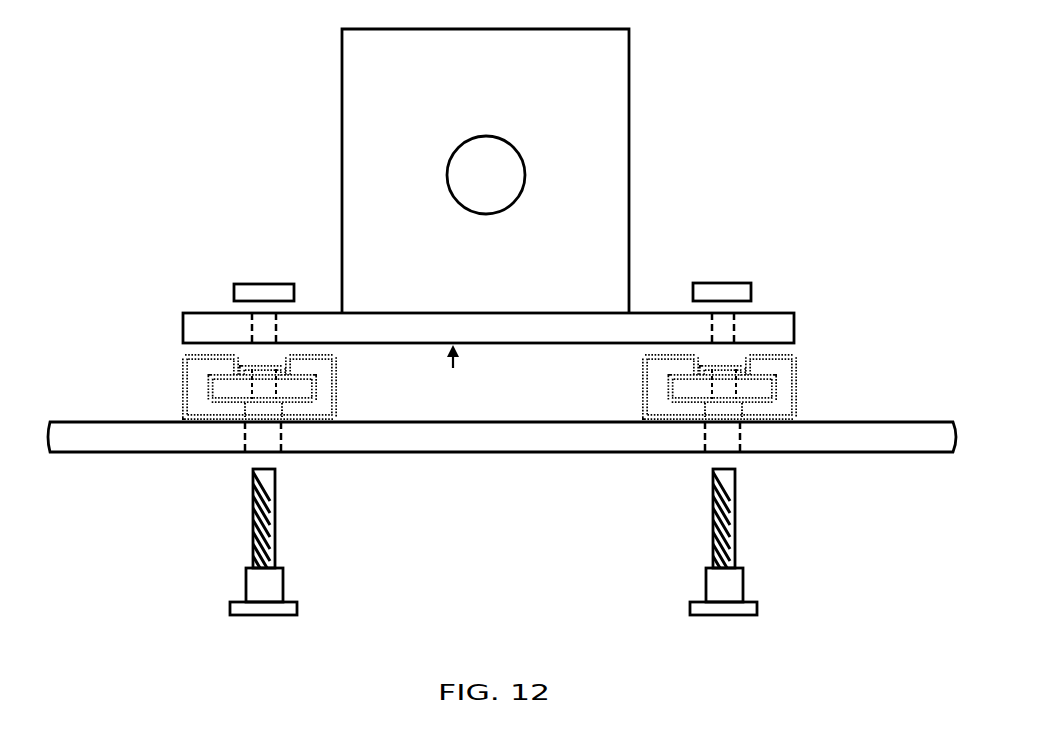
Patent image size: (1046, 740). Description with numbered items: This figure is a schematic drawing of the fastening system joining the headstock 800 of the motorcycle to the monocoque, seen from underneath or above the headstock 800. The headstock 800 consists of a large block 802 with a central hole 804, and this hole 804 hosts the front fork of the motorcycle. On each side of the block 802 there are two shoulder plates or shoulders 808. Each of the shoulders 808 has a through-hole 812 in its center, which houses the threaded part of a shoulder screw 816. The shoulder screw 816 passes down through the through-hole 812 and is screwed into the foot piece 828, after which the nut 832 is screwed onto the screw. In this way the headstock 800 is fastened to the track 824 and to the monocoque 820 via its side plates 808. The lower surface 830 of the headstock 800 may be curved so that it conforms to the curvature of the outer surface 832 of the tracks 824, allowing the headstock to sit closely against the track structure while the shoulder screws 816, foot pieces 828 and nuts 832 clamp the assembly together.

The headstock 800 is at (560, 29).
The block 802 is at (342, 213).
The central hole 804 is at (519, 155).
The shoulder plate 808 is at (794, 323).
The through-hole 812 is at (712, 338).
The shoulder screw 816 is at (735, 513).
The monocoque 820 is at (843, 422).
The track 824 is at (526, 380).
The foot piece 828 is at (673, 388).
The lower surface 830 is at (459, 366).
The nut 832 is at (753, 290).